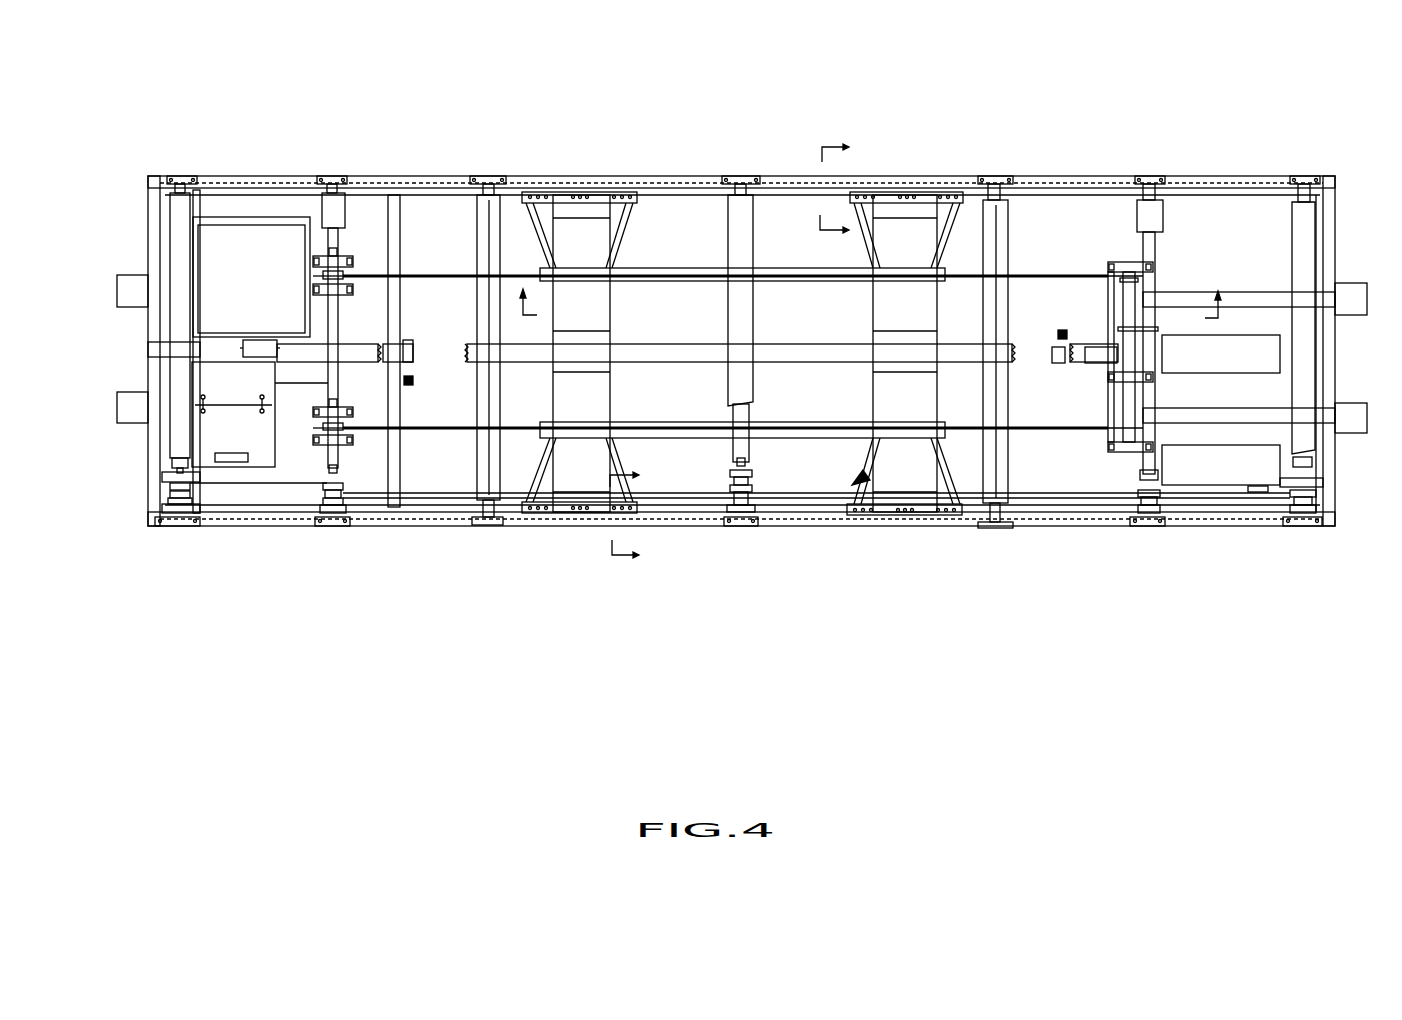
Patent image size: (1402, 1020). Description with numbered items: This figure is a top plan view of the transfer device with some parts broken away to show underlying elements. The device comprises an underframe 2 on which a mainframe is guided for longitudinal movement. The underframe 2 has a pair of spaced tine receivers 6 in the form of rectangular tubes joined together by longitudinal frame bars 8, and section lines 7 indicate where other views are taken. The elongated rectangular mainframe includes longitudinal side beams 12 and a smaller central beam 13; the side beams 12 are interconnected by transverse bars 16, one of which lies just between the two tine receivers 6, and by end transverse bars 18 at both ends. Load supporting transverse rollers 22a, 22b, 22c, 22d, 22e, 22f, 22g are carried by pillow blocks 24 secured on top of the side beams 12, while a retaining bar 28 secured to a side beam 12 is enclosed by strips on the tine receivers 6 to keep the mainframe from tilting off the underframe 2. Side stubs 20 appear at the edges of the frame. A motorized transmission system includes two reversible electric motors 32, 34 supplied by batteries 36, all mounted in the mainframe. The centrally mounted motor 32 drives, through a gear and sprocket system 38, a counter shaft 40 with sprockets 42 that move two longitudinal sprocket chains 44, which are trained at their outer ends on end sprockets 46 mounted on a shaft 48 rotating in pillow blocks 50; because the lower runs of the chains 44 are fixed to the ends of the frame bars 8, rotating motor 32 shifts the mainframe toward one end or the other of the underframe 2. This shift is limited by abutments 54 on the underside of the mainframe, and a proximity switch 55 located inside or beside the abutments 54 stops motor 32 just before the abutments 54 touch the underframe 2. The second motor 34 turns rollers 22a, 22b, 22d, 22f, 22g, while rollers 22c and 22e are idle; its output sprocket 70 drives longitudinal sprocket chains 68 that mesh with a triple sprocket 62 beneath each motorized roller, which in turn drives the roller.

The underframe 2 is at (860, 475).
The tine receivers 6 is at (862, 312).
The section line 7 is at (742, 313).
The longitudinal frame bars 8 is at (660, 268).
The longitudinal side beams 12 is at (630, 190).
The central beam 13 is at (650, 360).
The transverse bars 16 is at (335, 258).
The end transverse bars 18 is at (153, 206).
The mounting stub 20 is at (130, 292).
The load supporting transverse roller 22a is at (1310, 222).
The load supporting transverse roller 22b is at (1153, 225).
The load supporting transverse roller 22c is at (1005, 212).
The load supporting transverse roller 22d is at (738, 210).
The load supporting transverse roller 22e is at (498, 240).
The load supporting transverse roller 22f is at (337, 222).
The load supporting transverse roller 22g is at (175, 208).
The pillow blocks 24 is at (333, 526).
The retaining bar 28 is at (1097, 212).
The electric motor 32 is at (1262, 343).
The electric motor 34 is at (1282, 462).
The batteries 36 is at (200, 436).
The gear and sprocket system 38 is at (1050, 262).
The counter shaft 40 is at (1135, 402).
The sprockets 42 is at (1135, 267).
The sprocket chains 44 is at (995, 218).
The end sprockets 46 is at (345, 283).
The shaft 48 is at (353, 268).
The pillow blocks 50 is at (348, 258).
The abutments 54 is at (412, 345).
The proximity switch 55 is at (413, 380).
The triple sprocket 62 is at (190, 487).
The sprocket chains 68 is at (260, 490).
The output sprocket 70 is at (1245, 491).